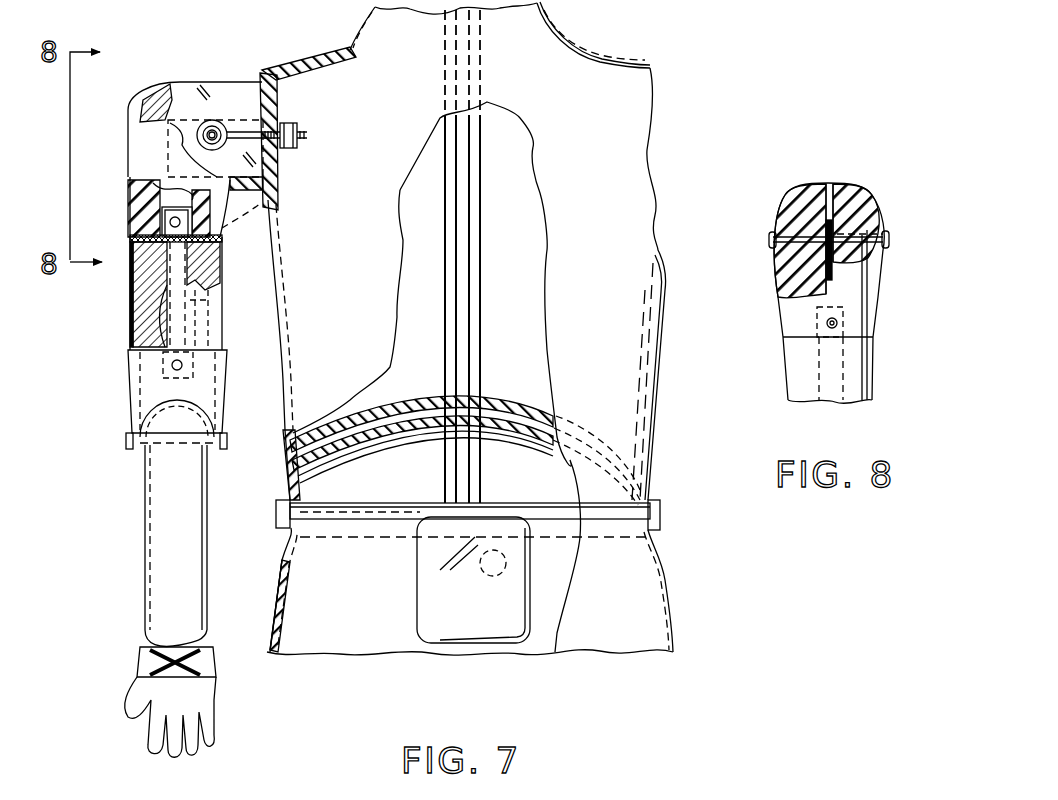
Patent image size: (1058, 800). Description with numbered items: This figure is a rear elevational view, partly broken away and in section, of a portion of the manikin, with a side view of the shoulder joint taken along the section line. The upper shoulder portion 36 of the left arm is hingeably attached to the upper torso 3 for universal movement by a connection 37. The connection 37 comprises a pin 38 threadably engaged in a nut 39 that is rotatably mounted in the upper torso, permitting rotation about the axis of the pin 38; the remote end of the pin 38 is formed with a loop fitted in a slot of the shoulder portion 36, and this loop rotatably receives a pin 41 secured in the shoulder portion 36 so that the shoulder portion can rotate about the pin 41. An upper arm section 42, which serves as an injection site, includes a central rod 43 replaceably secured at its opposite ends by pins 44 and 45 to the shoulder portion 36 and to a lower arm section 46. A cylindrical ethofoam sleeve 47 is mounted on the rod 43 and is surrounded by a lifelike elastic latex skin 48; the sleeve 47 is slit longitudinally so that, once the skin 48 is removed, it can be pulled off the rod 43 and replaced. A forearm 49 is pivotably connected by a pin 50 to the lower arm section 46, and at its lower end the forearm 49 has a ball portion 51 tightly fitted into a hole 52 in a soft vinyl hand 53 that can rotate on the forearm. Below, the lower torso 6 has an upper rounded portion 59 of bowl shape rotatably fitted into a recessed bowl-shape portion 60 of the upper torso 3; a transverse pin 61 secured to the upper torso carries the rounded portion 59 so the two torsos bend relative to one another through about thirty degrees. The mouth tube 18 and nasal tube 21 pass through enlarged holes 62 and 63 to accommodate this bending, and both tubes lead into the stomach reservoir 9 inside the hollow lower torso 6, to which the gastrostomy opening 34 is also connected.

In FIG. 7, the upper torso 3 is at (288, 346).
In FIG. 7, the lower torso 6 is at (273, 608).
In FIG. 7, the stomach reservoir 9 is at (428, 607).
In FIG. 7, the mouth tube 18 is at (449, 298).
In FIG. 7, the nasal tube 21 is at (481, 320).
In FIG. 7, the gastrostomy opening 34 is at (508, 563).
In FIG. 7, the upper shoulder portion 36 is at (136, 108).
In FIG. 8, the upper shoulder portion 36 is at (790, 206).
In FIG. 7, the connection 37 is at (225, 128).
In FIG. 7, the pin 38 is at (250, 132).
In FIG. 7, the nut 39 is at (208, 125).
In FIG. 8, the nut 39 is at (783, 267).
In FIG. 7, the pin 41 is at (208, 140).
In FIG. 8, the pin 41 is at (808, 240).
In FIG. 7, the upper arm section 42 is at (128, 283).
In FIG. 8, the upper arm section 42 is at (788, 368).
In FIG. 7, the central rod 43 is at (175, 250).
In FIG. 7, the pin 44 is at (165, 207).
In FIG. 8, the pin 44 is at (826, 323).
In FIG. 7, the pin 45 is at (172, 368).
In FIG. 7, the lower arm section 46 is at (208, 394).
In FIG. 7, the cylindrical ethofoam sleeve 47 is at (142, 312).
In FIG. 7, the elastic latex skin 48 is at (130, 336).
In FIG. 7, the forearm 49 is at (196, 538).
In FIG. 7, the pin 50 is at (206, 465).
In FIG. 7, the ball portion 51 is at (160, 676).
In FIG. 7, the hole 52 is at (192, 672).
In FIG. 7, the hand 53 is at (210, 712).
In FIG. 7, the upper rounded portion 59 is at (380, 447).
In FIG. 7, the recessed bowl-shape portion 60 is at (432, 403).
In FIG. 7, the transverse pin 61 is at (348, 512).
In FIG. 7, the enlarged hole 62 is at (492, 410).
In FIG. 7, the enlarged hole 63 is at (497, 438).